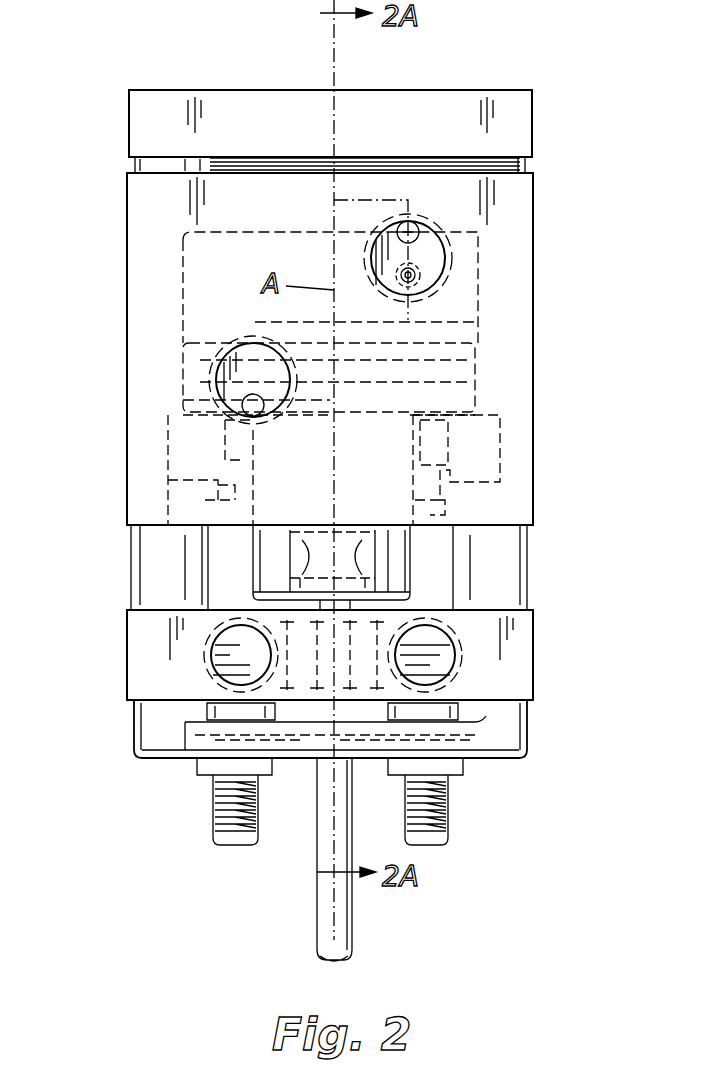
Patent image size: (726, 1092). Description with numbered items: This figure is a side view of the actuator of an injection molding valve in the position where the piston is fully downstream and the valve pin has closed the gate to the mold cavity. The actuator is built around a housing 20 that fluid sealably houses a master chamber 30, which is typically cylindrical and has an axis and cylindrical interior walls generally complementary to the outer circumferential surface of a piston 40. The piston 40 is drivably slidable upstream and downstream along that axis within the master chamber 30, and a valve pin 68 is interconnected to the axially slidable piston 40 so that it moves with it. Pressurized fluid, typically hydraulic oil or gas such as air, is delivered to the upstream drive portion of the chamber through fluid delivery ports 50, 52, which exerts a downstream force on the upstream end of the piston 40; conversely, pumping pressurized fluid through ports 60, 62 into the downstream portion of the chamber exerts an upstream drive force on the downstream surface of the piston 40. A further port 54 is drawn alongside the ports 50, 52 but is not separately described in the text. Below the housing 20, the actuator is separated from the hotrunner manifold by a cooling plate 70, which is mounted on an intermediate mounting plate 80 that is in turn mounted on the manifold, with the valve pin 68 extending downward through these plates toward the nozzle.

The housing 20 is at (127, 250).
The master chamber 30 is at (474, 333).
The piston 40 is at (185, 355).
The fluid delivery port 50 is at (437, 255).
The fluid delivery port 52 is at (415, 228).
The pin 54 is at (420, 275).
The port 60 is at (230, 387).
The port 62 is at (213, 400).
The valve pin 68 is at (352, 908).
The cooling plate 70 is at (127, 668).
The intermediate mounting plate 80 is at (134, 727).